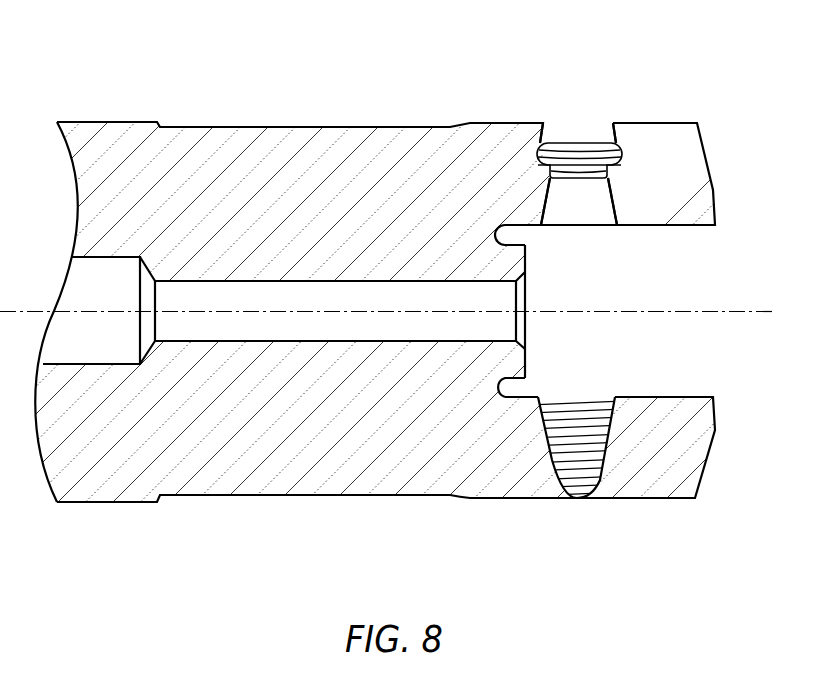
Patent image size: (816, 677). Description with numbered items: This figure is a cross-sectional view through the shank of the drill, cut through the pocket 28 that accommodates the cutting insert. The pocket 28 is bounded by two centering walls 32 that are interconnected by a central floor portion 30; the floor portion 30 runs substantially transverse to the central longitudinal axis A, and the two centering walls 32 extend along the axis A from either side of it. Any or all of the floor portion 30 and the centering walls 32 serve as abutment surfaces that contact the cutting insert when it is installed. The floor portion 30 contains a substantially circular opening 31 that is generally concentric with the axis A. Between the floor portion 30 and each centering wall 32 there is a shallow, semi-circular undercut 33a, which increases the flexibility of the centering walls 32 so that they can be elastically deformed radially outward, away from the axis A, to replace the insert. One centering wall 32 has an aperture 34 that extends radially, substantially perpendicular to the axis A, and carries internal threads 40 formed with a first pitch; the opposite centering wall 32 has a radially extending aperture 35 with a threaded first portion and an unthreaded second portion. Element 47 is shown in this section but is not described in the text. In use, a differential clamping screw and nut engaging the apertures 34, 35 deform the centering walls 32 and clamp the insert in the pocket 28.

The pocket 28 is at (684, 347).
The central floor portion 30 is at (528, 253).
The circular opening 31 is at (502, 338).
The centering wall 32 is at (678, 112).
The semi-circular undercut 33a is at (510, 235).
The aperture 34 is at (562, 458).
The aperture 35 is at (547, 197).
The internal threads 40 is at (587, 450).
The groove / gap 47 is at (588, 150).
The central longitudinal axis A is at (757, 312).